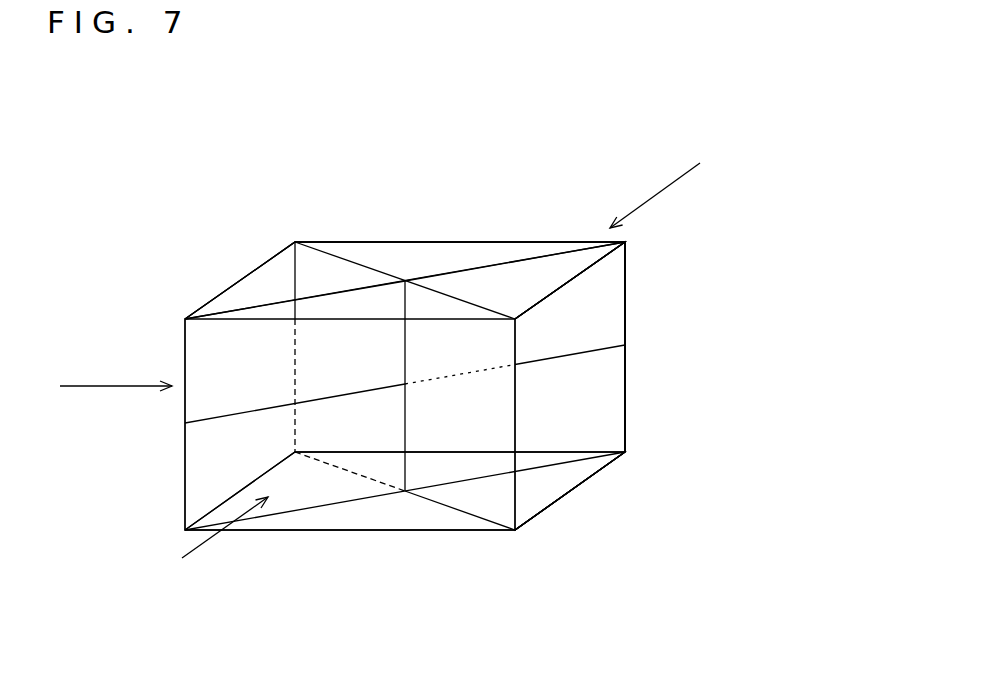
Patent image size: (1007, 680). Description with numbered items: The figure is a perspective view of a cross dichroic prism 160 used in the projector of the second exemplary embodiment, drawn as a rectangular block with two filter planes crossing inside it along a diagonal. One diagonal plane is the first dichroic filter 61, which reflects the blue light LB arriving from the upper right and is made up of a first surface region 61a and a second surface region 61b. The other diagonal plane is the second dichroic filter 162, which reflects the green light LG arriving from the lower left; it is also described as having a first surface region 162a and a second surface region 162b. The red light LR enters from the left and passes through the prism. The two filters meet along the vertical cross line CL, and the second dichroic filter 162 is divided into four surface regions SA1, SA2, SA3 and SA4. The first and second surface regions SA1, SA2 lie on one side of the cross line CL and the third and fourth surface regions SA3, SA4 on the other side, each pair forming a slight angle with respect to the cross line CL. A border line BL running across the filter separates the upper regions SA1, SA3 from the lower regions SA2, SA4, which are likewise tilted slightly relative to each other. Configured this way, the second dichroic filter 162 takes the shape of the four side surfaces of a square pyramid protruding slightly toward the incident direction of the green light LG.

The cross dichroic prism 160 is at (798, 106).
The first dichroic filter 61 is at (338, 239).
The first surface region 61a is at (322, 247).
The second surface region 61b is at (520, 311).
The second dichroic filter 162 is at (530, 246).
The first surface region 162a is at (563, 252).
The second surface region 162b is at (240, 307).
The cross line CL is at (408, 300).
The border line BL is at (600, 358).
The red light LR is at (125, 380).
The green light LG is at (200, 545).
The blue light LB is at (655, 176).
The first surface region SA1 is at (598, 308).
The second surface region SA2 is at (598, 410).
The third surface region SA3 is at (333, 307).
The fourth surface region SA4 is at (318, 497).